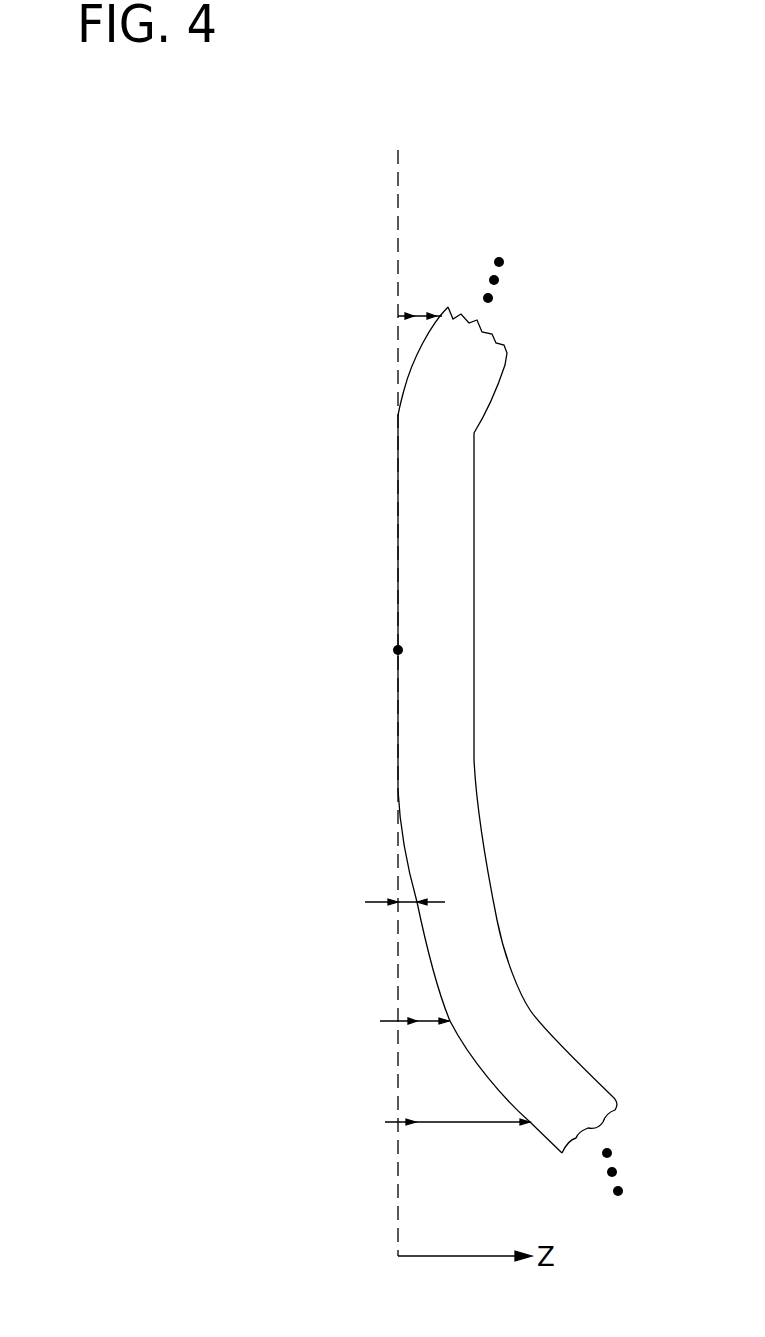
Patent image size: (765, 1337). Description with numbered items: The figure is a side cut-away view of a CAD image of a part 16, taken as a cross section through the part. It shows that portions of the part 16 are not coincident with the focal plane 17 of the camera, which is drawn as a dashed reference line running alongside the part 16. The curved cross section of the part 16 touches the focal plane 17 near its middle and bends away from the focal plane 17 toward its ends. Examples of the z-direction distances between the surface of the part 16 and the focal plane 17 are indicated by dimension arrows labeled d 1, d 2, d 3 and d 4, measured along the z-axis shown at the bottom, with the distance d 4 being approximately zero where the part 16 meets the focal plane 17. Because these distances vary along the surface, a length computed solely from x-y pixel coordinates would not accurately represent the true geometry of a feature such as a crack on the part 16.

The part 16 is at (474, 550).
The focal plane 17 is at (398, 215).
The distance d1 1 is at (441, 1124).
The distance d2 2 is at (397, 1023).
The distance d3 3 is at (387, 901).
The distance d4 4 is at (360, 655).